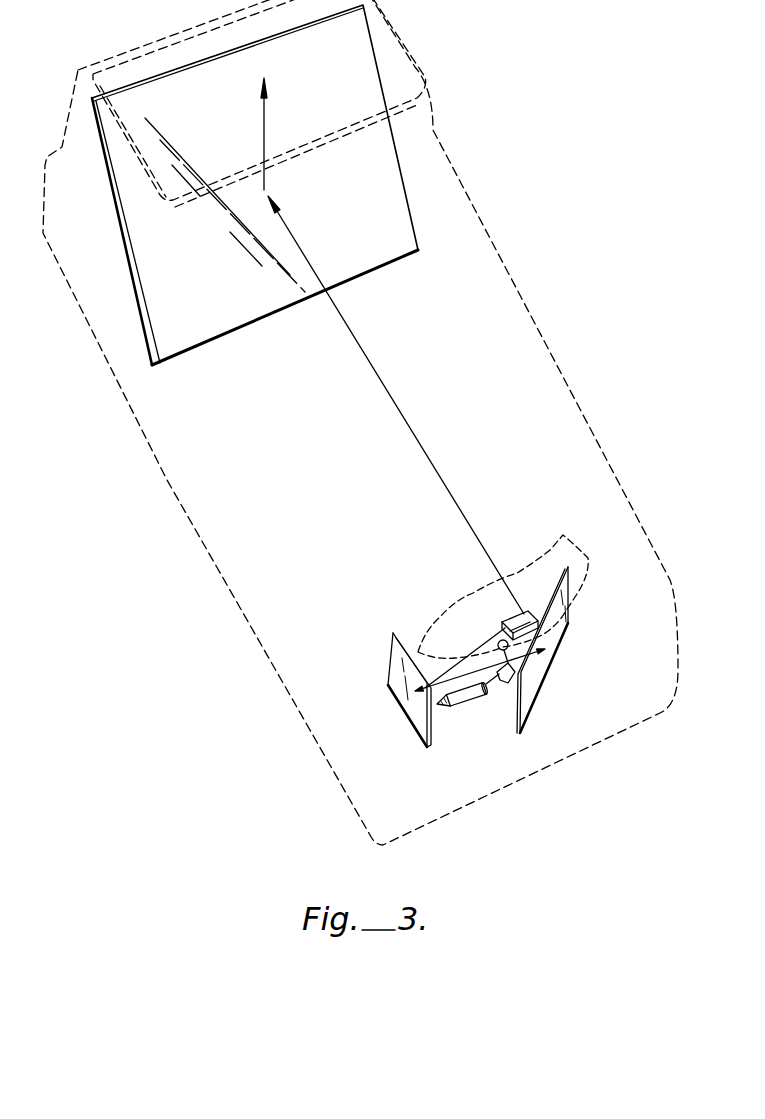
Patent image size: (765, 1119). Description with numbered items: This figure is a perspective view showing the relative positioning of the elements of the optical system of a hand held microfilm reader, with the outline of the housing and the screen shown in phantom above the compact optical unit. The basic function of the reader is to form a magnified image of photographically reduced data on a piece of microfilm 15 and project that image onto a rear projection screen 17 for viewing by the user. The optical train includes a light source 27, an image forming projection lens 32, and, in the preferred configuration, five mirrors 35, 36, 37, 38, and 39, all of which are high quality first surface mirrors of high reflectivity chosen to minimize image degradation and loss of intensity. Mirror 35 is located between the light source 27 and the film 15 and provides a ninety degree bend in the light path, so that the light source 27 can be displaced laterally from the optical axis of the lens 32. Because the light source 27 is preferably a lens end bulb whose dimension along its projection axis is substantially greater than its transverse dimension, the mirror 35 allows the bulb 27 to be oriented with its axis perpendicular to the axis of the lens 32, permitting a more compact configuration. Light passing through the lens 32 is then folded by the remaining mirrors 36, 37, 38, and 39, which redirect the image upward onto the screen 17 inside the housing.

The microfilm 15 is at (566, 534).
The rear projection screen 17 is at (408, 75).
The light source 27 is at (461, 704).
The image forming projection lens 32 is at (498, 642).
The mirror 35 is at (504, 684).
The mirror 36 is at (503, 620).
The mirror 37 is at (395, 663).
The mirror 38 is at (555, 637).
The mirror 39 is at (410, 232).